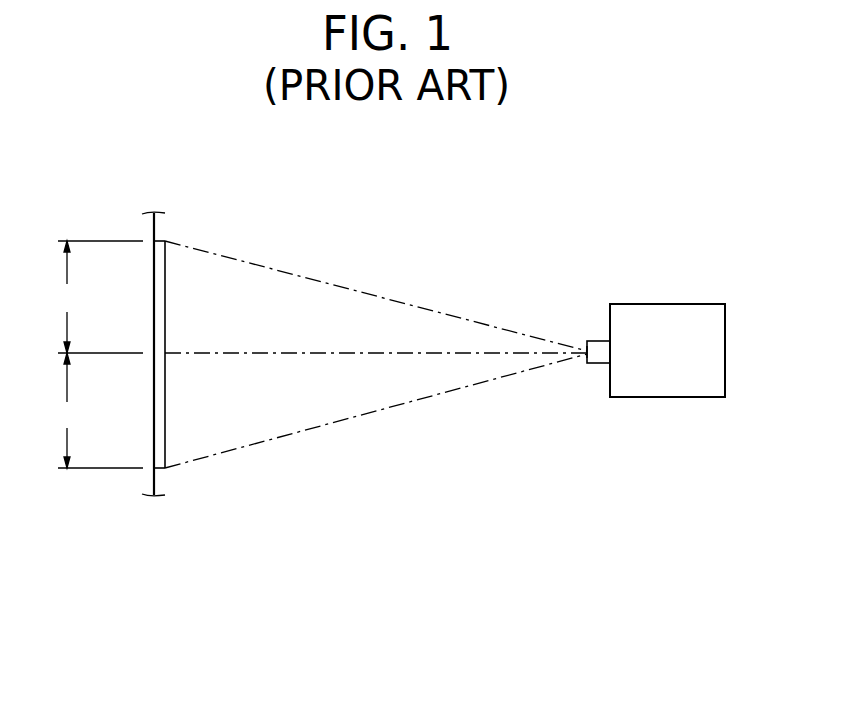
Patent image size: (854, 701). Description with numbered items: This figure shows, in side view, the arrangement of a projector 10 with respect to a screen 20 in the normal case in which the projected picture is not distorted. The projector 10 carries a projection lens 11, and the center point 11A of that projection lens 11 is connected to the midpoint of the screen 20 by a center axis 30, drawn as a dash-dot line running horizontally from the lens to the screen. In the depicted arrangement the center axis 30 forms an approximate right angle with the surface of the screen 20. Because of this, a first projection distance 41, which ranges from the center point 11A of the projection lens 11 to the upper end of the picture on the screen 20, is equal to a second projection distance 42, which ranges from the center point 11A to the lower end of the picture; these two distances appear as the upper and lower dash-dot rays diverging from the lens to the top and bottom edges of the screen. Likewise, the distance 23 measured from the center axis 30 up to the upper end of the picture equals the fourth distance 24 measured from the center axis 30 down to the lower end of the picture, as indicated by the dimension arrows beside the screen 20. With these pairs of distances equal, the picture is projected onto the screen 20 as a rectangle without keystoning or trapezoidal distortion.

The projector 10 is at (685, 398).
The projection lens 11 is at (599, 365).
The center point 11A is at (586, 355).
The screen 20 is at (166, 305).
The third distance 23 is at (97, 297).
The fourth distance 24 is at (97, 410).
The center axis 30 is at (284, 353).
The first projection distance 41 is at (403, 300).
The second projection distance 42 is at (401, 403).